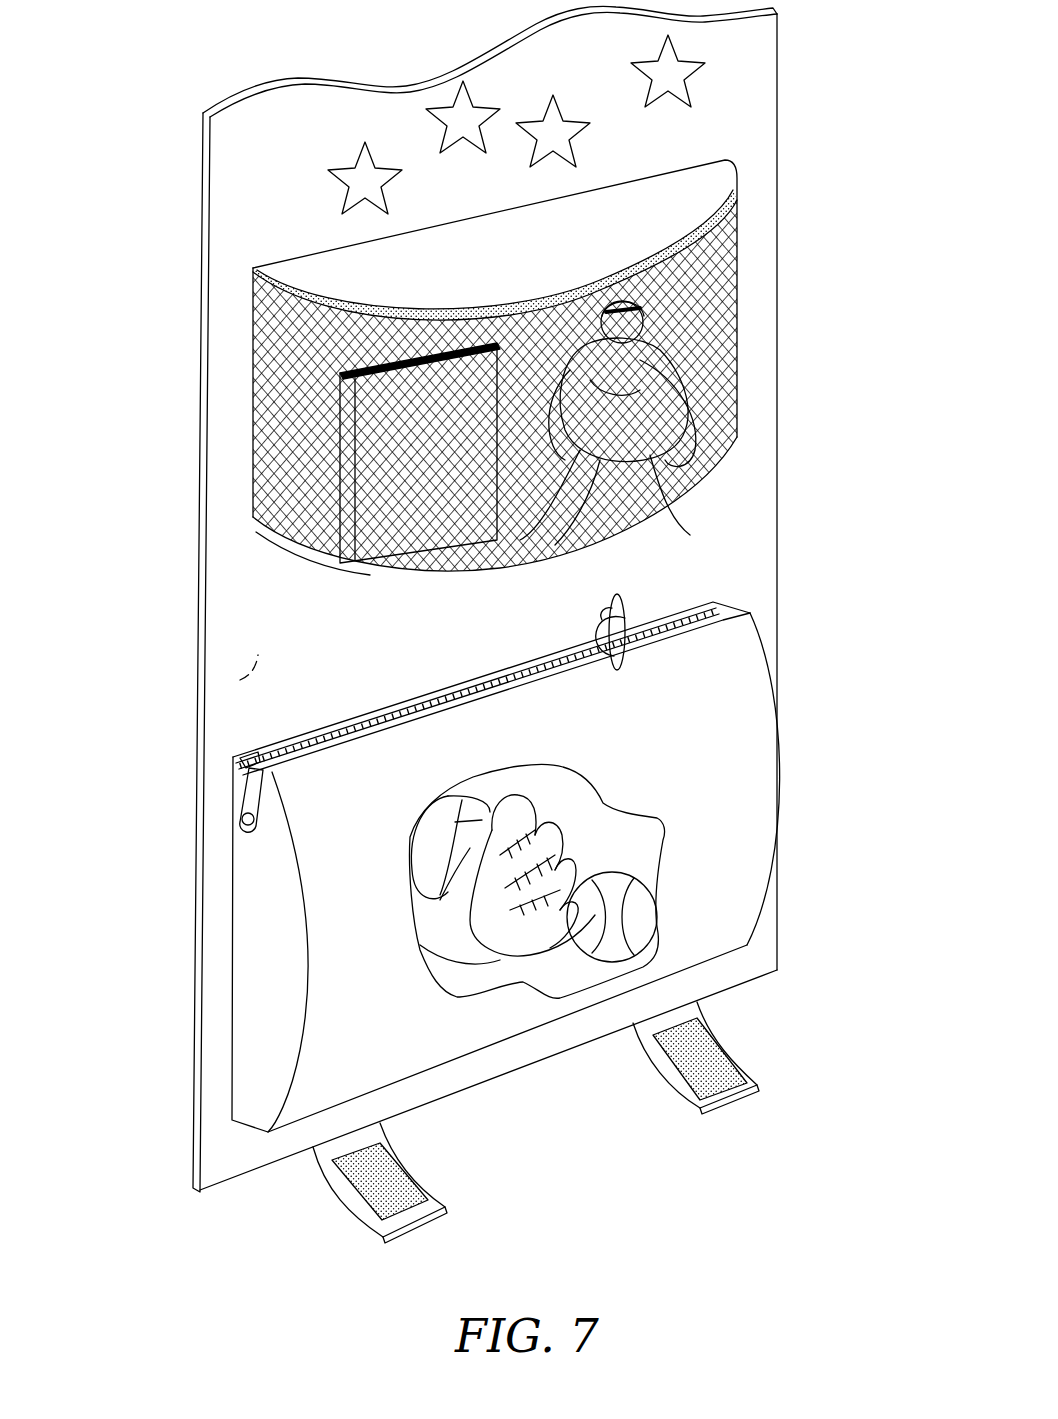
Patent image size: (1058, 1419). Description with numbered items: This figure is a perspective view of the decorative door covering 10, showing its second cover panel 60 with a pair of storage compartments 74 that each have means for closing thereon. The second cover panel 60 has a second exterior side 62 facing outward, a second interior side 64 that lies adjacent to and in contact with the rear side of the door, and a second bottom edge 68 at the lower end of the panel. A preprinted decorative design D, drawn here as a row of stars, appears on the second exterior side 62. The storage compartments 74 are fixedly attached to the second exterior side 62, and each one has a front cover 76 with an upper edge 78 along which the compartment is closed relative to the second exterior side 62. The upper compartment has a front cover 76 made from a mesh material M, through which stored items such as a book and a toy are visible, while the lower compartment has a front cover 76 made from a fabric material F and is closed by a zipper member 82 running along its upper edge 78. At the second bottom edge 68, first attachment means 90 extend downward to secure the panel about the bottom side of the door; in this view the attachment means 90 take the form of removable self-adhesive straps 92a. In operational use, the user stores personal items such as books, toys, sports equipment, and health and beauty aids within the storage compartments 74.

The decorative door covering 10 is at (470, 599).
The second cover panel 60 is at (554, 599).
The second exterior side 62 is at (588, 130).
The preprinted decorative design D is at (474, 150).
The second interior side 64 is at (262, 642).
The second bottom edge 68 is at (480, 1082).
The storage compartment 74 is at (491, 652).
The front cover 76 is at (259, 540).
The upper edge 78 is at (352, 348).
The zipper member 82 is at (357, 717).
The mesh material M is at (289, 397).
The fabric material F is at (342, 1037).
The first attachment means 90 is at (578, 1127).
The removable self-adhesive strap 92a is at (722, 1093).